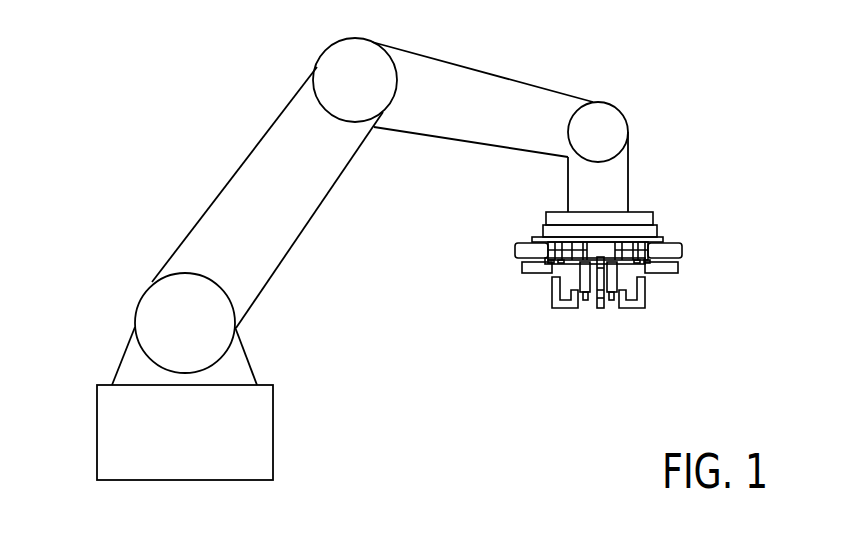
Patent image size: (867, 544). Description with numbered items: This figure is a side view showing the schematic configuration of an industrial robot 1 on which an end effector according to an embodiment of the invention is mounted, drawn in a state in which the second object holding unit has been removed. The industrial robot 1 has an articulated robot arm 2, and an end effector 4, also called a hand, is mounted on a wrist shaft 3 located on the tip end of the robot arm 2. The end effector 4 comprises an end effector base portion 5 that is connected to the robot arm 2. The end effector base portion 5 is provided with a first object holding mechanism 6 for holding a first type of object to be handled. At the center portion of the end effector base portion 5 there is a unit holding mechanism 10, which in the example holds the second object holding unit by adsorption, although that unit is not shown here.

The industrial robot 1 is at (128, 87).
The robot arm 2 is at (477, 78).
The wrist shaft 3 is at (617, 183).
The end effector 4 is at (675, 220).
The end effector base portion 5 is at (548, 218).
The first object holding mechanism 6 is at (557, 305).
The unit holding mechanism 10 is at (608, 292).